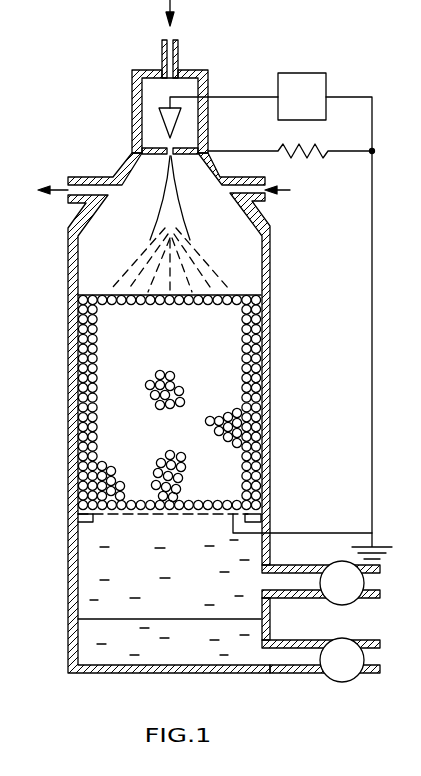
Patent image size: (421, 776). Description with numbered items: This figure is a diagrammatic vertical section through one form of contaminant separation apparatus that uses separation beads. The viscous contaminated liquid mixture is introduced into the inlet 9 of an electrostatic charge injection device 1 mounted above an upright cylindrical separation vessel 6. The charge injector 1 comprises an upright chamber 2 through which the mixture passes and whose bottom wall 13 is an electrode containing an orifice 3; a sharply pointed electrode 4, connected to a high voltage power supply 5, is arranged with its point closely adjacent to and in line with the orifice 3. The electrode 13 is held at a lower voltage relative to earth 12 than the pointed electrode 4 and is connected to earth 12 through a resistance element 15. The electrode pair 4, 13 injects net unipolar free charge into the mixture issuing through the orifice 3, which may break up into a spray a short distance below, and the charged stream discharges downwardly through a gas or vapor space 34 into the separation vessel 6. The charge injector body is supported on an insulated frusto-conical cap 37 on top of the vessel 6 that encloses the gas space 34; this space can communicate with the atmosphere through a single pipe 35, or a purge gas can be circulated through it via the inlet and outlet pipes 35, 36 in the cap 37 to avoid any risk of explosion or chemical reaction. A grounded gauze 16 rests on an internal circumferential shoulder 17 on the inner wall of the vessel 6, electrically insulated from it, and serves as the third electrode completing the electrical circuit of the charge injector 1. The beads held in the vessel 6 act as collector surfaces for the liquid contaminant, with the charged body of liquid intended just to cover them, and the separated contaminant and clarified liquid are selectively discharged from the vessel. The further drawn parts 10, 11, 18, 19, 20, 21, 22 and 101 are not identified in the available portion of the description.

The electrostatic charge injection device 1 is at (120, 76).
The chamber 2 is at (132, 104).
The orifice 3 is at (168, 156).
The pointed electrode 4 is at (176, 122).
The high voltage power supply 5 is at (312, 73).
The separation vessel 6 is at (268, 398).
The inlet 9 is at (178, 53).
The liquid layer 10 is at (178, 573).
The lower liquid layer 11 is at (178, 650).
The earth 12 is at (378, 545).
The bottom wall electrode 13 is at (148, 147).
The resistance element 15 is at (296, 157).
The grounded gauze 16 is at (163, 514).
The internal circumferential shoulder 17 is at (262, 517).
The upper pipe 18 is at (298, 579).
The lower pipe 19 is at (300, 658).
The upper pump 20 is at (362, 598).
The lower pump 21 is at (352, 680).
The vessel wall 22 is at (238, 294).
The gas or vapor space 34 is at (238, 250).
The inlet pipe 35 is at (266, 201).
The outlet pipe 36 is at (82, 177).
The frusto-conical cap 37 is at (221, 170).
The beads along wall 101 is at (262, 341).